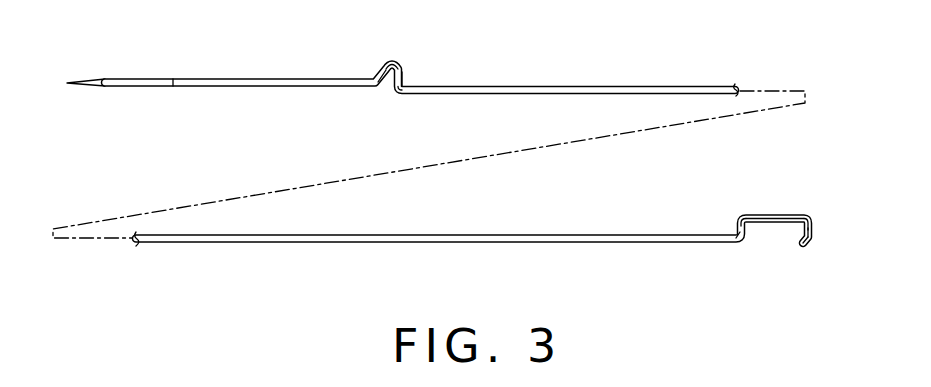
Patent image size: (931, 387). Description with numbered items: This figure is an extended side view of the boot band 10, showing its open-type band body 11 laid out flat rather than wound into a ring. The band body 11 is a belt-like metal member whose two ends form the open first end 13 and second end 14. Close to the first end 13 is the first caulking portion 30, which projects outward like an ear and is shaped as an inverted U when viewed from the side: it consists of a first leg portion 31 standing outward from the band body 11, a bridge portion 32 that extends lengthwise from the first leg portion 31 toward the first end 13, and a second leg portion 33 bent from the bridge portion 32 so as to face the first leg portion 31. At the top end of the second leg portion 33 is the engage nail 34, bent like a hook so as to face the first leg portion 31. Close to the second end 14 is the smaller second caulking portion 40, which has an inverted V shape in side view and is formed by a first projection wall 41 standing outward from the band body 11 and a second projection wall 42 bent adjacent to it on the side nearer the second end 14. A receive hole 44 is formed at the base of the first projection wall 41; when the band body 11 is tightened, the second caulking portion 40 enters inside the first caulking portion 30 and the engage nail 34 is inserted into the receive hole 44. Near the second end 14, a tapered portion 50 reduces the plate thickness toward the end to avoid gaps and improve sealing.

The boot band 10 is at (810, 84).
The band body 11 is at (497, 244).
The first end 13 is at (812, 246).
The second end 14 is at (67, 83).
The first caulking portion 30 is at (770, 215).
The first leg portion 31 is at (736, 228).
The bridge portion 32 is at (746, 220).
The second leg portion 33 is at (811, 217).
The engage nail 34 is at (806, 250).
The second caulking portion 40 is at (400, 67).
The first projection wall 41 is at (407, 78).
The second projection wall 42 is at (378, 75).
The receive hole 44 is at (398, 93).
The tapered portion 50 is at (120, 79).